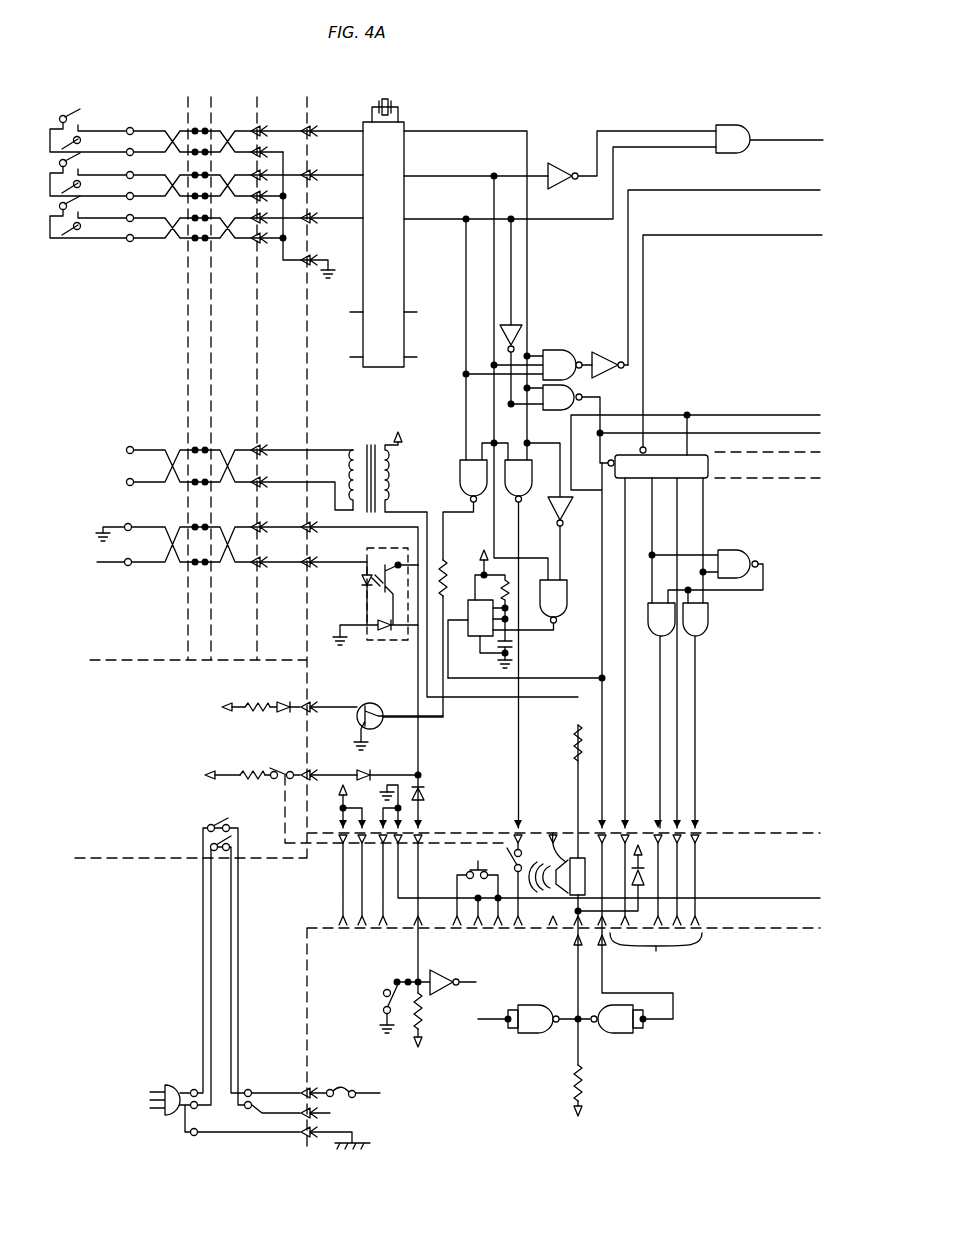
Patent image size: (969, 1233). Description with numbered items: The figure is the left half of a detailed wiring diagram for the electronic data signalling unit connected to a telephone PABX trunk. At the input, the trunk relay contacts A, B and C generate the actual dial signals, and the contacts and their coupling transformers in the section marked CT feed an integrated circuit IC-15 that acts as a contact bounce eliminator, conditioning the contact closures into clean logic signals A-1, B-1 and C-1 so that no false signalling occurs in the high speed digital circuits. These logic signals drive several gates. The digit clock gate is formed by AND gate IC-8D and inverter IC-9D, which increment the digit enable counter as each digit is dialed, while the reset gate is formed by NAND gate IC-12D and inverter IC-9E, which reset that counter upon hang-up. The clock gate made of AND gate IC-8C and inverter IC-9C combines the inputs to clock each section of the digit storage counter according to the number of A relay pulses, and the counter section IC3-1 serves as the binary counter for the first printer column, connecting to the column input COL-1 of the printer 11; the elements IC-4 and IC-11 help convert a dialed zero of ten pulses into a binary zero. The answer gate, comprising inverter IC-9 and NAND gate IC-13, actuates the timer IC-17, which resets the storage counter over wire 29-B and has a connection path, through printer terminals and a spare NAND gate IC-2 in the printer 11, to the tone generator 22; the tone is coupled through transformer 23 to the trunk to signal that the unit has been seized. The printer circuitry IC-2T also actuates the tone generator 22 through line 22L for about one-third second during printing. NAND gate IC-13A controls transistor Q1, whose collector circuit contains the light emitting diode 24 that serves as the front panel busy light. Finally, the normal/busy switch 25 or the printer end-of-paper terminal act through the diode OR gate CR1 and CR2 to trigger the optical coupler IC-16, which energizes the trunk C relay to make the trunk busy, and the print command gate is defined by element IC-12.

The A relay contact A is at (67, 110).
The B relay contact B is at (60, 166).
The C relay contact C is at (62, 205).
The current transformer section CT is at (90, 352).
The contact bounce eliminator IC-15 is at (383, 233).
The output signal A-1 is at (425, 130).
The output signal B-1 is at (425, 176).
The output signal C-1 is at (425, 219).
The inverter IC-9D is at (566, 162).
The AND gate IC-8D is at (738, 125).
The inverter IC-9C is at (512, 322).
The NAND gate IC-12D is at (578, 336).
The inverter IC-9E is at (607, 349).
The AND gate IC-8C is at (582, 389).
The digit storage counter section IC3-1 is at (658, 466).
The zero conversion logic element IC-4 is at (737, 555).
The zero conversion logic element IC-11 is at (708, 625).
The transformer 23 is at (373, 445).
The NAND gate IC-13A is at (460, 467).
The print command gate element IC-12 is at (516, 503).
The inverter gate IC-9 is at (563, 507).
The NAND gate IC-13 is at (567, 612).
The timer IC-17 is at (468, 600).
The wire 29-B is at (602, 678).
The optical coupler IC-16 is at (365, 607).
The light emitting diode 24 is at (288, 703).
The transistor Q1 is at (373, 704).
The normal/busy switch 25 is at (272, 765).
The diode CR1 is at (365, 768).
The diode CR2 is at (427, 789).
The tone generator 22 is at (553, 840).
The column one printer input COL-1 is at (656, 952).
The line 22L is at (578, 979).
The printer internal circuitry IC-2T is at (535, 1032).
The spare NAND gate IC-2 is at (630, 1033).
The printer 11 is at (724, 1060).